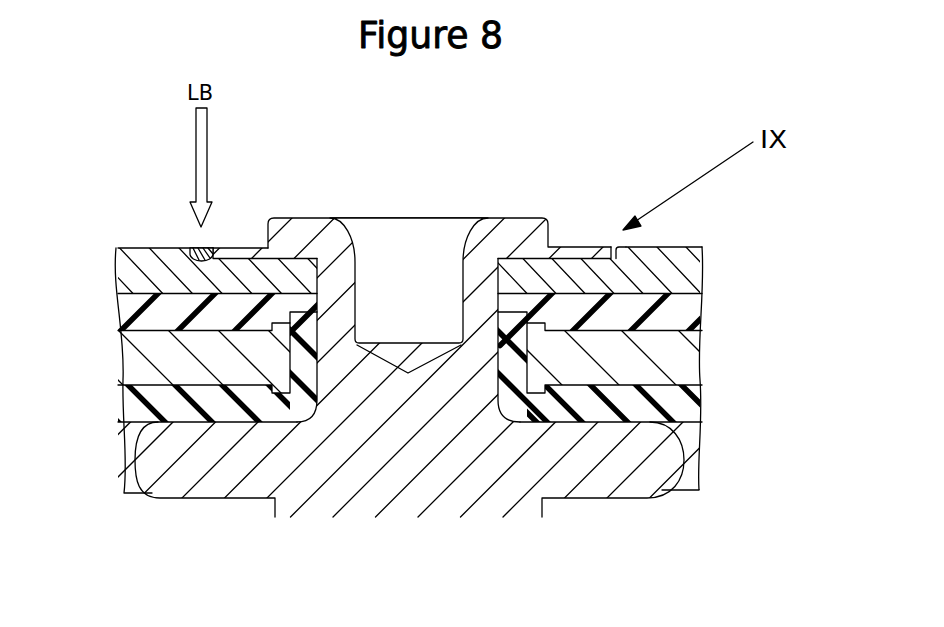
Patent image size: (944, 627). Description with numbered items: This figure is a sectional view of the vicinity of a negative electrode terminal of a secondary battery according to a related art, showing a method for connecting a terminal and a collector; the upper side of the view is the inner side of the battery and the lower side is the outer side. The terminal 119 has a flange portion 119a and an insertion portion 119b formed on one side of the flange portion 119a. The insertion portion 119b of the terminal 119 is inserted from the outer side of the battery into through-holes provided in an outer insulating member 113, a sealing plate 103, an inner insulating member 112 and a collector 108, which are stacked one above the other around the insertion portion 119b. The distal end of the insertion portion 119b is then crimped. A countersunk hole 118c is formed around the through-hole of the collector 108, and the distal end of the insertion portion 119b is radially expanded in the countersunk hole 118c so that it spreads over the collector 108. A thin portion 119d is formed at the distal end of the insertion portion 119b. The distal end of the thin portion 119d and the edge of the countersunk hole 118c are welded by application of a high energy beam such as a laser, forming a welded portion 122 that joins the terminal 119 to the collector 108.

The terminal 119 is at (403, 463).
The flange portion 119a is at (595, 478).
The insertion portion 119b is at (370, 257).
The thin portion 119d is at (237, 255).
The countersunk hole 118c is at (598, 247).
The collector 108 is at (678, 265).
The inner insulating member 112 is at (676, 308).
The sealing plate 103 is at (678, 350).
The outer insulating member 113 is at (678, 395).
The welded portion 122 is at (200, 248).